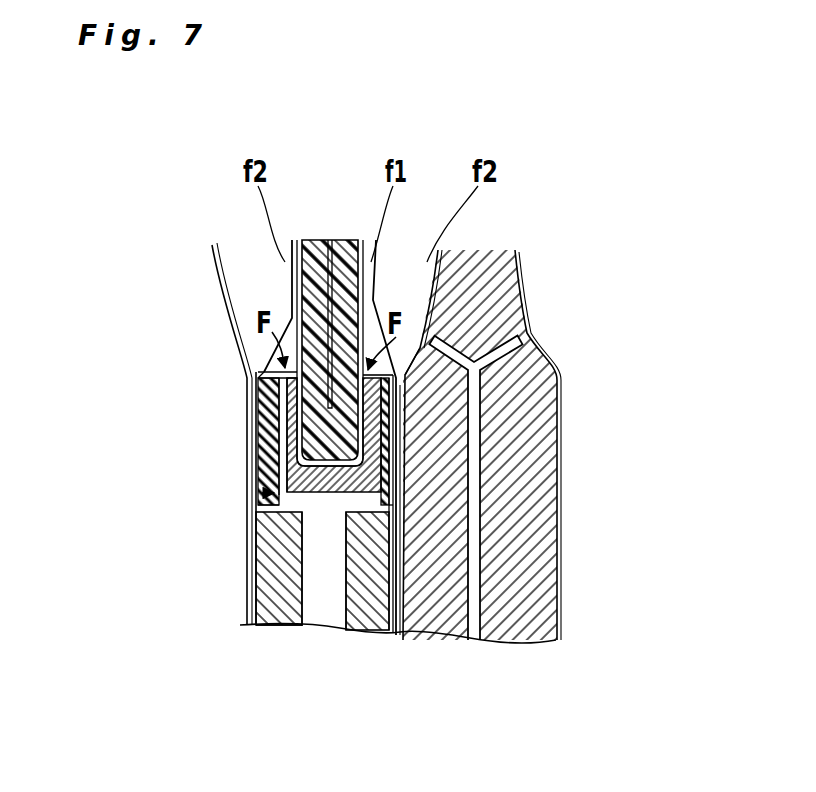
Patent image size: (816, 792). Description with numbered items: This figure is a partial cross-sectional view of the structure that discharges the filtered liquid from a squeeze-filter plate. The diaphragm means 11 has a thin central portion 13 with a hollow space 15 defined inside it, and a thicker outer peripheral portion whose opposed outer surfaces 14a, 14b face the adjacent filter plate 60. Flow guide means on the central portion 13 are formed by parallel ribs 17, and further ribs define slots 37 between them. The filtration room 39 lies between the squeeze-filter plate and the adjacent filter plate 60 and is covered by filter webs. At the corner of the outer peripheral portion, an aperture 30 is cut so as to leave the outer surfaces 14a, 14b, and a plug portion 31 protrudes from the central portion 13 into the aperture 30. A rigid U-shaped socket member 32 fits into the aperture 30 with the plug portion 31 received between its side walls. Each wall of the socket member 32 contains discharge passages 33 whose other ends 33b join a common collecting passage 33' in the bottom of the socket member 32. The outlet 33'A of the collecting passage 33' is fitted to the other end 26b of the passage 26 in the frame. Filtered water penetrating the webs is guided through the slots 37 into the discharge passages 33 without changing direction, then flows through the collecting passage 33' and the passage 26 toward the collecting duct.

The diaphragm means 11 is at (323, 248).
The hollow space 15 is at (346, 248).
The parallel ribs 17 is at (385, 250).
The central portion 13 is at (300, 285).
The filtration room 39 is at (416, 290).
The slots 37 is at (285, 352).
The other end of discharge passage 33b is at (268, 378).
The discharge passages 33 is at (208, 434).
The plug portion 31 is at (320, 432).
The aperture 30 is at (296, 462).
The outer surface of outer peripheral portion 14a is at (266, 492).
The socket member 32 is at (320, 502).
The collecting passage 33' is at (217, 565).
The outlet of collecting passage 33'A is at (216, 568).
The adjacent filter plate 60 is at (527, 452).
The passage 26 is at (317, 600).
The other end of passage 26b is at (325, 535).
The outer surface of outer peripheral portion 14b is at (390, 470).